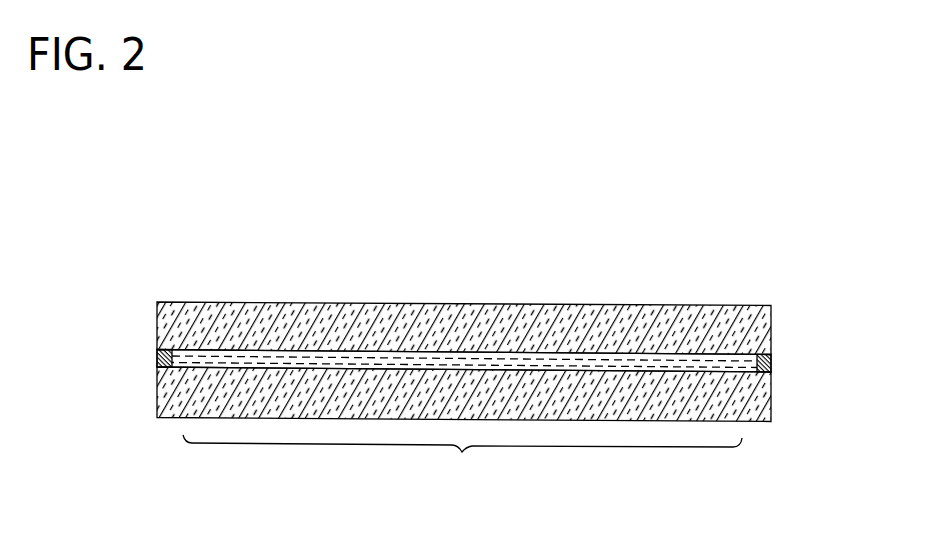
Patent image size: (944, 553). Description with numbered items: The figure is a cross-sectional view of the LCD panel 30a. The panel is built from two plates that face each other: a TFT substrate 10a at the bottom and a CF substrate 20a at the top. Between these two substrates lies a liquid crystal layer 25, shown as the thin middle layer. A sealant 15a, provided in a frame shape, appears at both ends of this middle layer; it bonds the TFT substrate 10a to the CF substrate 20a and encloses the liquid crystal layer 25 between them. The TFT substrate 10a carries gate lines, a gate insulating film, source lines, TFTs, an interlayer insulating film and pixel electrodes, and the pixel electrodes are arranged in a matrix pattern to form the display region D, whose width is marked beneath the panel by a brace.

The LCD panel 30a is at (177, 239).
The CF substrate 20a is at (757, 334).
The sealant 15a is at (513, 313).
The liquid crystal layer 25 is at (567, 365).
The TFT substrate 10a is at (757, 407).
The display region D is at (462, 465).